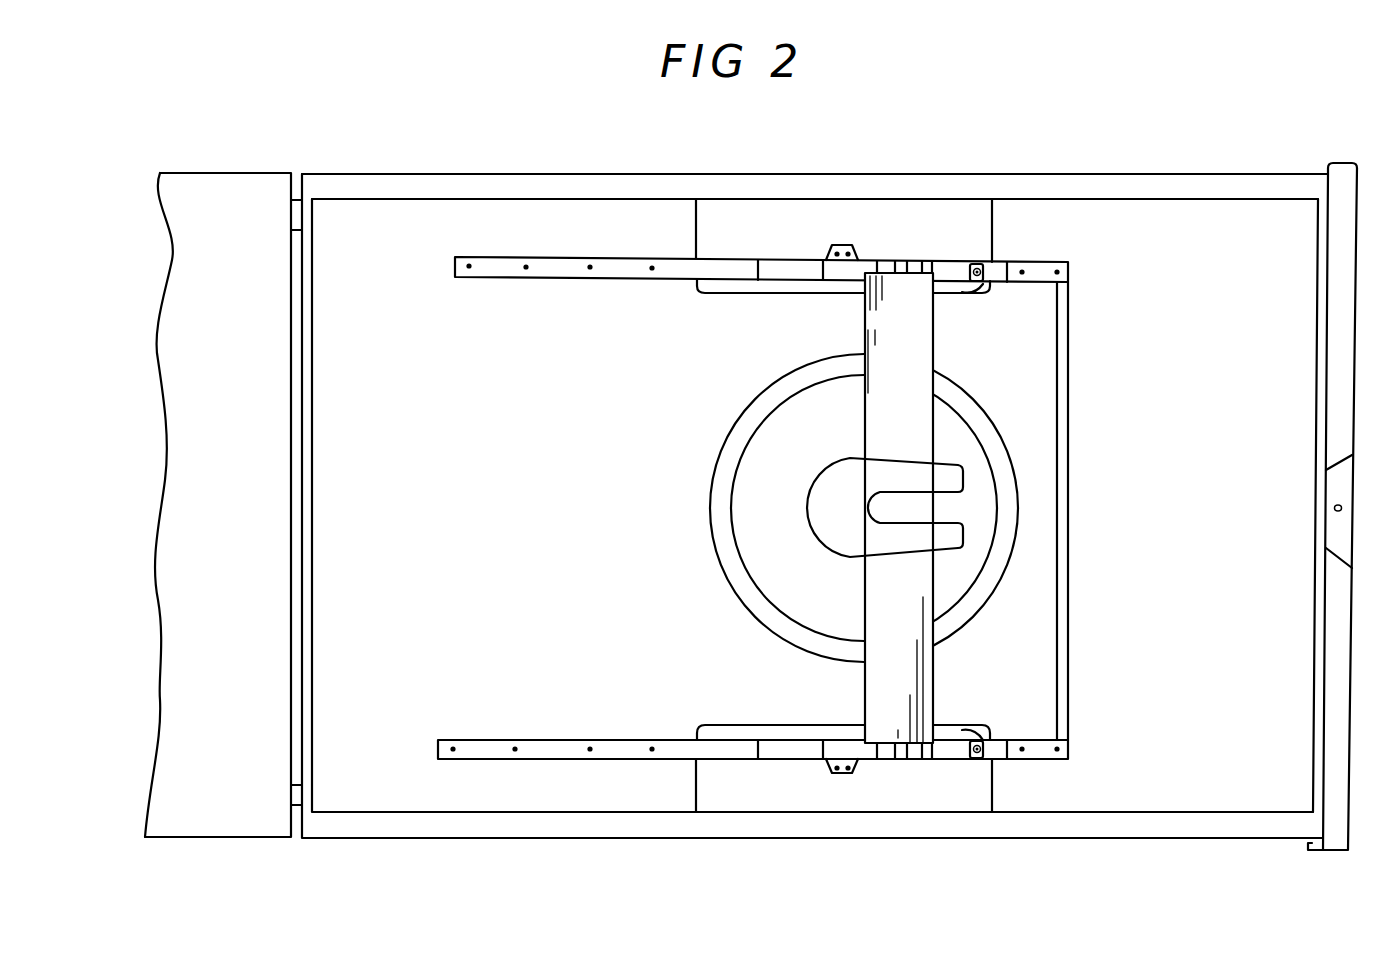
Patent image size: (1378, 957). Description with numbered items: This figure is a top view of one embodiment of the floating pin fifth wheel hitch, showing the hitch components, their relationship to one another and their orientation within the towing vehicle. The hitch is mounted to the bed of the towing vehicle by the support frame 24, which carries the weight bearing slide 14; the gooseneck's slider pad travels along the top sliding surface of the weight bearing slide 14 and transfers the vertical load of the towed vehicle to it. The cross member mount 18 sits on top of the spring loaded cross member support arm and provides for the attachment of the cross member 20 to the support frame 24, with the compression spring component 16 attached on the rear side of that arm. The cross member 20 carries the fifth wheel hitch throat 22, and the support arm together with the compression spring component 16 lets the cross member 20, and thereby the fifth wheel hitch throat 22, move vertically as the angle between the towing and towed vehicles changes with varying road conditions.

The weight bearing slide 14 is at (703, 497).
The compression spring component 16 is at (993, 284).
The cross member mount 18 is at (886, 260).
The cross member 20 is at (903, 325).
The fifth wheel hitch throat 22 is at (858, 505).
The support frame 24 is at (513, 738).